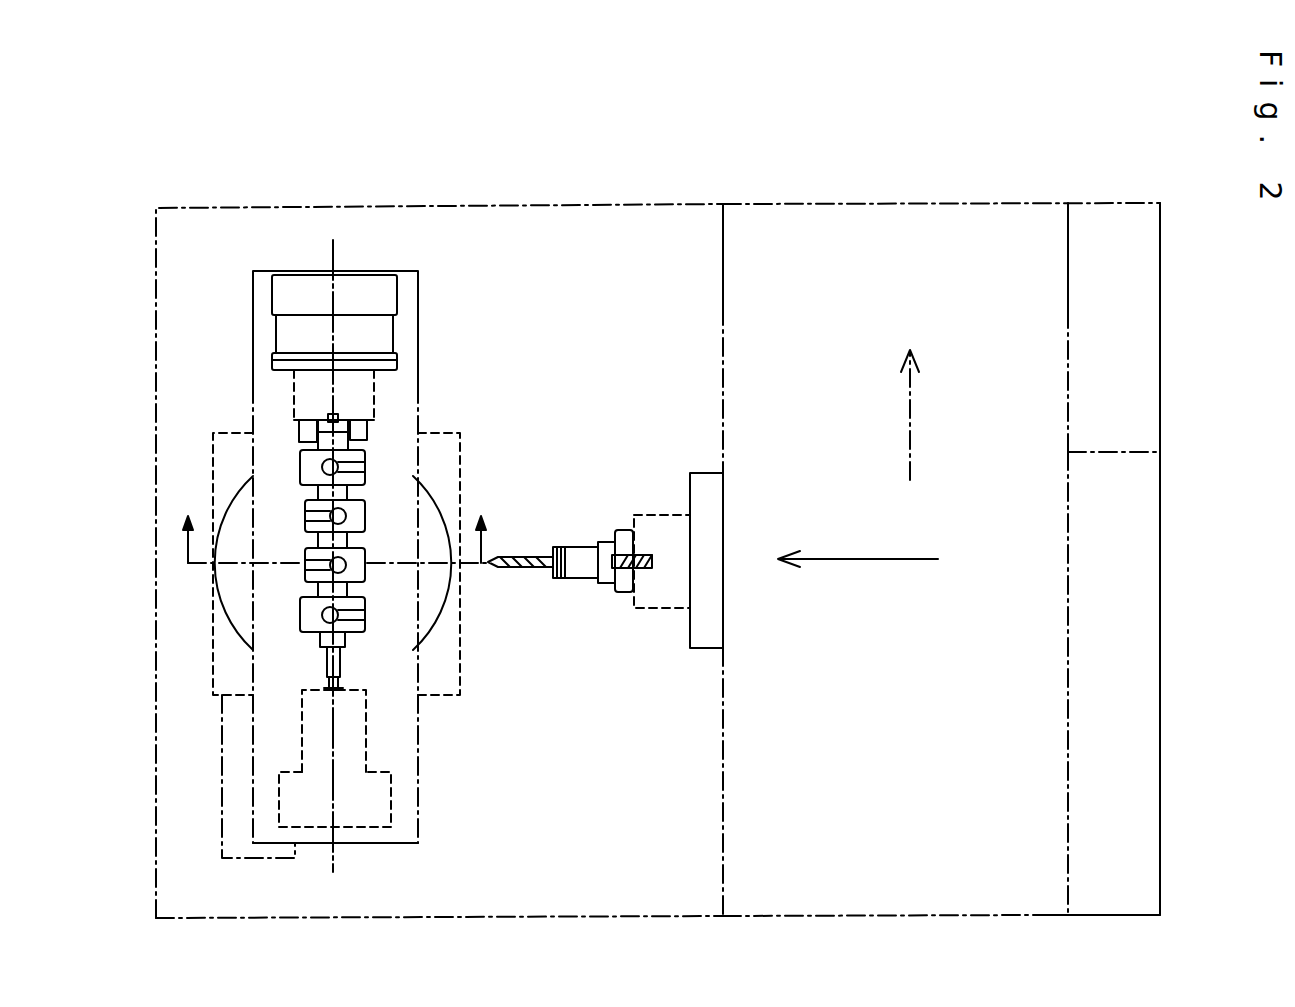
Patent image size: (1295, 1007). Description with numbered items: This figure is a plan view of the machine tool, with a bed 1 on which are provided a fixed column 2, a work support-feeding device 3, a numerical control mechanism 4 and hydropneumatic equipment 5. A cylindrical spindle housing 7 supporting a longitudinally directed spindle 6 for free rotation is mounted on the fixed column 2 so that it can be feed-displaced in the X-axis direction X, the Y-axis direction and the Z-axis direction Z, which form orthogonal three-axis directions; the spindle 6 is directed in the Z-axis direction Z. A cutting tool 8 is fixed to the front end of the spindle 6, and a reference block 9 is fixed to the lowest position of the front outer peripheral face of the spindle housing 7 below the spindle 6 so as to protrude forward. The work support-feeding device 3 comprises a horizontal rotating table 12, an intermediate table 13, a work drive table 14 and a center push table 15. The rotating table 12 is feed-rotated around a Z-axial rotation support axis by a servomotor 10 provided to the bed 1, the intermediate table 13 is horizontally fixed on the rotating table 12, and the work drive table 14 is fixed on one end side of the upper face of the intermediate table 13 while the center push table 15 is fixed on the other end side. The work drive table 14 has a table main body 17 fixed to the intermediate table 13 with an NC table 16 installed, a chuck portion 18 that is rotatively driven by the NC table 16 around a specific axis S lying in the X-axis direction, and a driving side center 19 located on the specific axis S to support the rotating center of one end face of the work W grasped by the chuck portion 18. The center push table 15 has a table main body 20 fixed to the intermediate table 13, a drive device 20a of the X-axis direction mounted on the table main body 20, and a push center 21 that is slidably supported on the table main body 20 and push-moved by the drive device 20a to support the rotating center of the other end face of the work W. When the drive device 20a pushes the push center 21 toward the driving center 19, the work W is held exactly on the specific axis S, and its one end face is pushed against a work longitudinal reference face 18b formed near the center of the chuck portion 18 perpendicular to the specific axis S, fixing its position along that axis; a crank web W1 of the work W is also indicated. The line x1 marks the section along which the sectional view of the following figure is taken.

The bed 1 is at (583, 913).
The fixed column 2 is at (723, 307).
The work support-feeding device 3 is at (198, 577).
The numerical control mechanism 4 is at (1092, 604).
The hydropneumatic equipment 5 is at (1090, 312).
The spindle 6 is at (620, 530).
The spindle housing 7 is at (667, 598).
The cutting tool 8 is at (515, 557).
The reference block 9 is at (643, 583).
The servomotor 10 is at (233, 743).
The horizontal rotating table 12 is at (242, 602).
The intermediate table 13 is at (405, 712).
The work drive table 14 is at (391, 293).
The center push table 15 is at (276, 799).
The NC table 16 is at (375, 288).
The table main body 17 is at (378, 325).
The chuck portion 18 is at (360, 398).
The work longitudinal reference face 18b is at (348, 442).
The driving side center 19 is at (323, 420).
The table main body 20 is at (377, 807).
The drive device 20a is at (357, 742).
The push center 21 is at (332, 684).
The work W is at (327, 563).
The crank web W1 is at (310, 563).
The specific axis S is at (332, 251).
The X-axis direction X is at (909, 397).
The Z-axis direction Z is at (845, 562).
The section line X1-X1 x1 is at (336, 521).